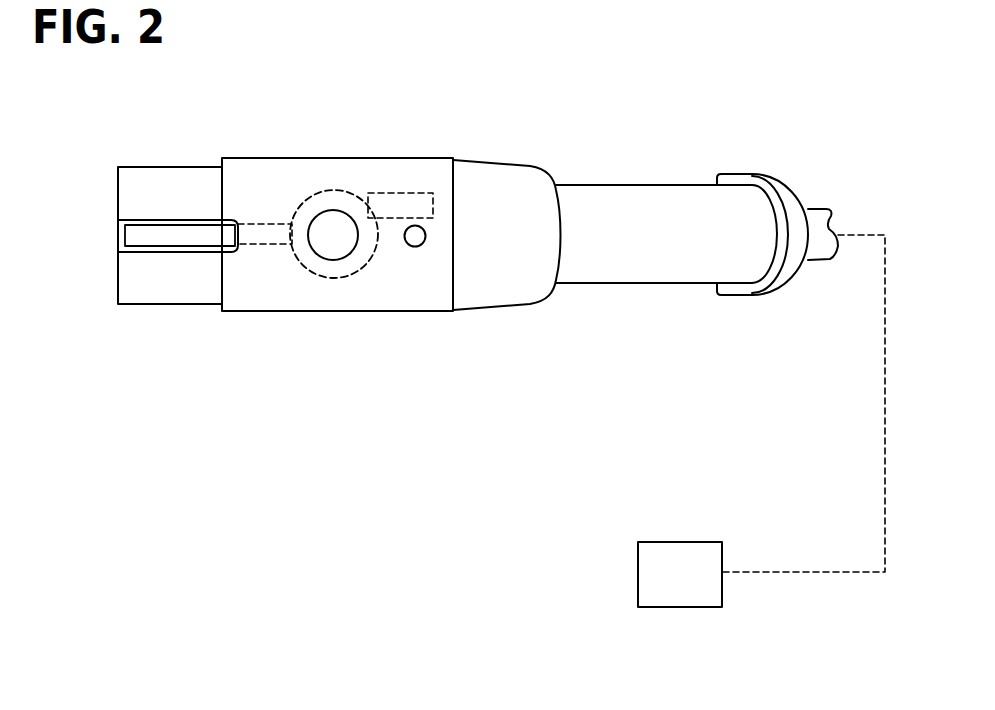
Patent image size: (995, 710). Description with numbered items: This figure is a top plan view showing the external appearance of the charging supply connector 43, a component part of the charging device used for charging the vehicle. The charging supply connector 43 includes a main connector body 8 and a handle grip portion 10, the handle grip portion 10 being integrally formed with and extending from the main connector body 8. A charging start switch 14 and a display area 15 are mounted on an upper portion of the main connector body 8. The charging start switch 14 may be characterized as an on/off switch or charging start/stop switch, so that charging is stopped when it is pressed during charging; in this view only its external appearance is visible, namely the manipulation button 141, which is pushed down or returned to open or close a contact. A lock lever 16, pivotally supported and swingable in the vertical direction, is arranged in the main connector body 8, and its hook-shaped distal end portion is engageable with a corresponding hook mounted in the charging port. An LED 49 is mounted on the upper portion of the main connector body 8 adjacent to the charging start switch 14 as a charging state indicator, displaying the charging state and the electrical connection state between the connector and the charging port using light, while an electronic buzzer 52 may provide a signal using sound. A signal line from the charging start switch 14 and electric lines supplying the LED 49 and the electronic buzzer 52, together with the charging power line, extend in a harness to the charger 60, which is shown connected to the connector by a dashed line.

The main connector body 8 is at (262, 185).
The lock lever 16 is at (171, 235).
The manipulation button 141 is at (333, 237).
The charging start switch 14 is at (320, 277).
The electronic buzzer 52 is at (412, 195).
The LED 49 is at (415, 247).
The display area 15 is at (395, 277).
The charging supply connector 43 is at (378, 128).
The handle grip portion 10 is at (642, 215).
The charger 60 is at (761, 421).